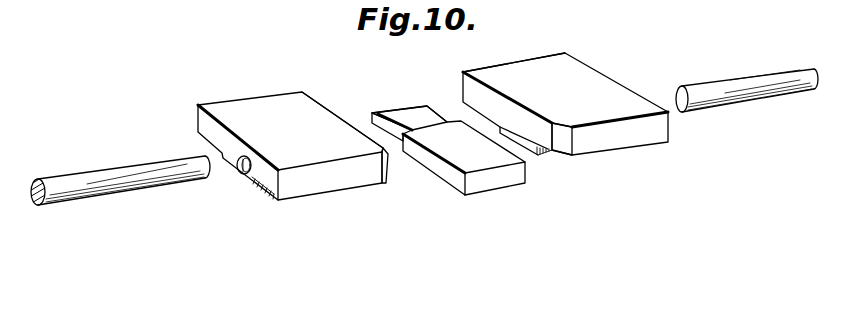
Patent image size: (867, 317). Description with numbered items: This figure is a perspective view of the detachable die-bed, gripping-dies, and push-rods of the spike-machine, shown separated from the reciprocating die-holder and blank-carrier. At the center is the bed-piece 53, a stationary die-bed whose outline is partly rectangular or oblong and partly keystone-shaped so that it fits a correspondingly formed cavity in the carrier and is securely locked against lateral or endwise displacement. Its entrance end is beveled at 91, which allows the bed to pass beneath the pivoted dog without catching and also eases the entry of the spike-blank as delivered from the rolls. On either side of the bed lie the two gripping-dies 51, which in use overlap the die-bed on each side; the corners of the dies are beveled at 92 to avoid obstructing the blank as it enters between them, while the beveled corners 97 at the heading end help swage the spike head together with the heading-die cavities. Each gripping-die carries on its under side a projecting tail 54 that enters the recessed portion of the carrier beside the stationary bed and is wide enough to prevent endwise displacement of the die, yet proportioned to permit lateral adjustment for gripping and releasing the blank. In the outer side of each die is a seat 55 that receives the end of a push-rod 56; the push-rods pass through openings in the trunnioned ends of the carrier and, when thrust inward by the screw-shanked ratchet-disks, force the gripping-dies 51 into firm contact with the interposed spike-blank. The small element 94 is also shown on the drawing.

The gripping-dies 51 is at (433, 126).
The bed-piece 53 is at (448, 150).
The projecting portion or tail 54 is at (268, 197).
The seat 55 is at (239, 172).
The push-rod 56 is at (97, 173).
The beveled entrance end 91 is at (393, 112).
The beveled corners 92 is at (302, 92).
The end piece 94 is at (561, 139).
The beveled corners 97 is at (387, 172).